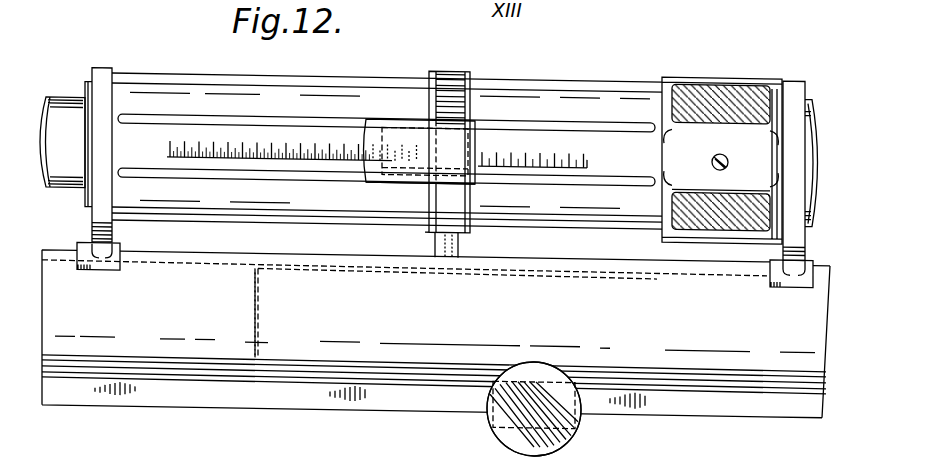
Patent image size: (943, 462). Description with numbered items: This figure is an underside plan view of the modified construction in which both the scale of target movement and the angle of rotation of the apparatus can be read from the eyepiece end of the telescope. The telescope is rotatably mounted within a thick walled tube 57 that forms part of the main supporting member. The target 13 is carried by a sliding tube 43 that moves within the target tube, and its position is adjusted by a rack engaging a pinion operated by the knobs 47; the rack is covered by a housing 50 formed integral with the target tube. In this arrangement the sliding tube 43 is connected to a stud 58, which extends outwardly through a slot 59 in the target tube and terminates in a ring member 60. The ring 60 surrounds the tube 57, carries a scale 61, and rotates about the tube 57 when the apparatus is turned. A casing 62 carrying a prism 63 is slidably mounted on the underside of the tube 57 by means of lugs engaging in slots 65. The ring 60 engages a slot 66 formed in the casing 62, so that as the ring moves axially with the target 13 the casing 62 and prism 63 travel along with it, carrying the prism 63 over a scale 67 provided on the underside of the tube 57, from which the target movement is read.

The target 13 is at (260, 298).
The sliding tube 43 is at (327, 266).
The knobs 47 is at (547, 376).
The housing 50 is at (275, 394).
The thick walled tube 57 is at (545, 208).
The stud 58 is at (443, 246).
The slot 59 is at (207, 262).
The ring member 60 is at (467, 85).
The scale 61 is at (445, 67).
The casing 62 is at (372, 164).
The prism 63 is at (414, 123).
The slots 65 is at (277, 175).
The slot 66 is at (461, 141).
The scale 67 is at (585, 158).